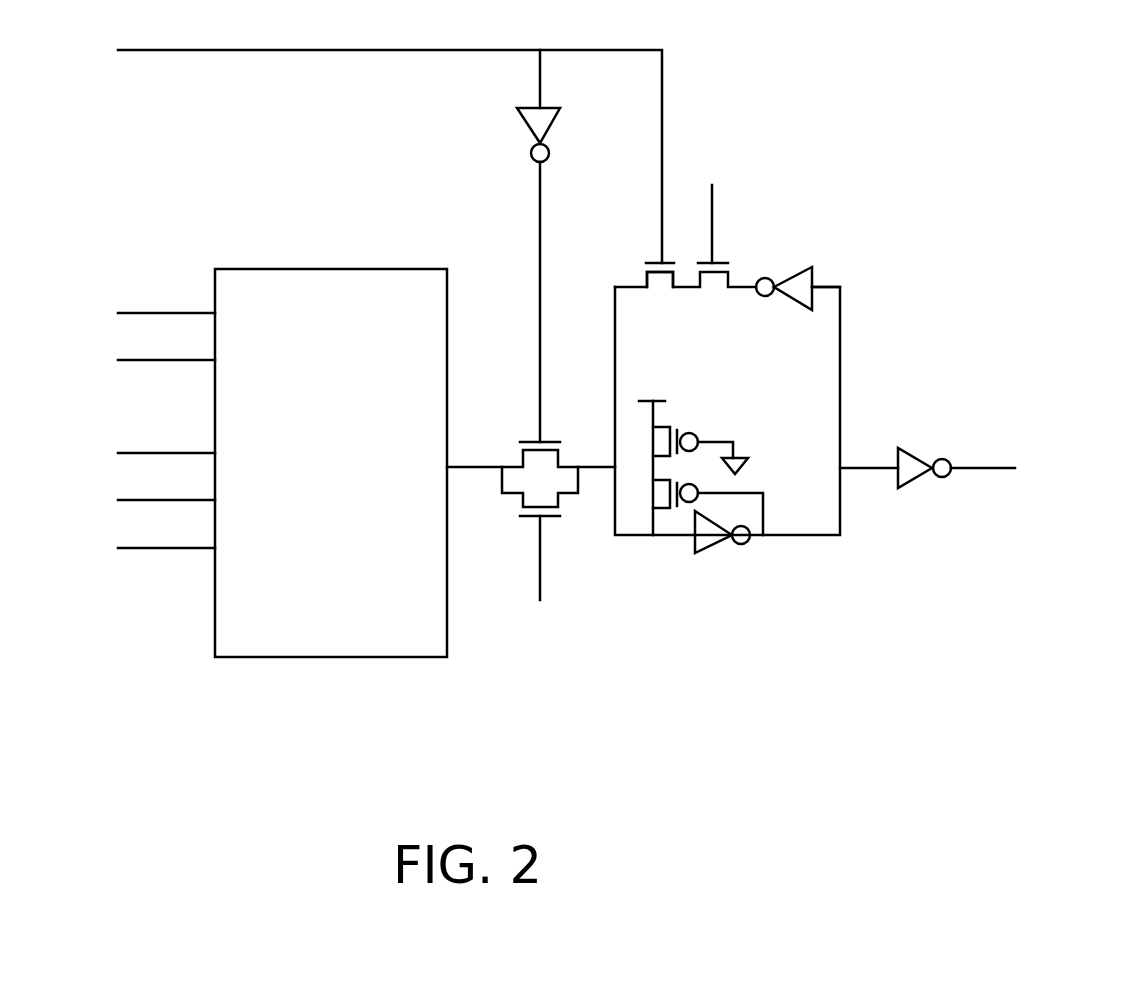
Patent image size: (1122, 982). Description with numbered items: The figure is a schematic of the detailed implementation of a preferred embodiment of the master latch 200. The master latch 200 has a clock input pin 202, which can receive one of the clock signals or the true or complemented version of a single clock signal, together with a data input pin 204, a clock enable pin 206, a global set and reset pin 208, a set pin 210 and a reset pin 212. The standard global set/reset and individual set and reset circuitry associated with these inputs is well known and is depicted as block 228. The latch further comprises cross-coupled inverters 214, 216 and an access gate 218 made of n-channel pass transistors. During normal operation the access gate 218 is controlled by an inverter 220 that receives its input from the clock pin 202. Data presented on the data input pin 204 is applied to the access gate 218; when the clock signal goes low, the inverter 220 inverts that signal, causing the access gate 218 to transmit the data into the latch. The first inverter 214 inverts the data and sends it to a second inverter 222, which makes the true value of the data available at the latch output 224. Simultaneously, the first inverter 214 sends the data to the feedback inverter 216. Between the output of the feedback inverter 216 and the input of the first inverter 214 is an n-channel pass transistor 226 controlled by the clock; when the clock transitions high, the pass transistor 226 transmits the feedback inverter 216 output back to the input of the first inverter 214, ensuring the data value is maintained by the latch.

The master latch 200 is at (943, 182).
The clock input pin 202 is at (367, 151).
The data input pin 204 is at (144, 315).
The clock enable pin 206 is at (144, 362).
The global set and reset pin 208 is at (144, 455).
The set pin 210 is at (144, 501).
The reset pin 212 is at (144, 549).
The first inverter 214 is at (722, 541).
The feedback inverter 216 is at (798, 279).
The access gate 218 is at (531, 509).
The inverter 220 is at (521, 246).
The second inverter 222 is at (924, 458).
The latch output 224 is at (1005, 471).
The n-channel pass transistor 226 is at (645, 260).
The block 228 is at (331, 463).